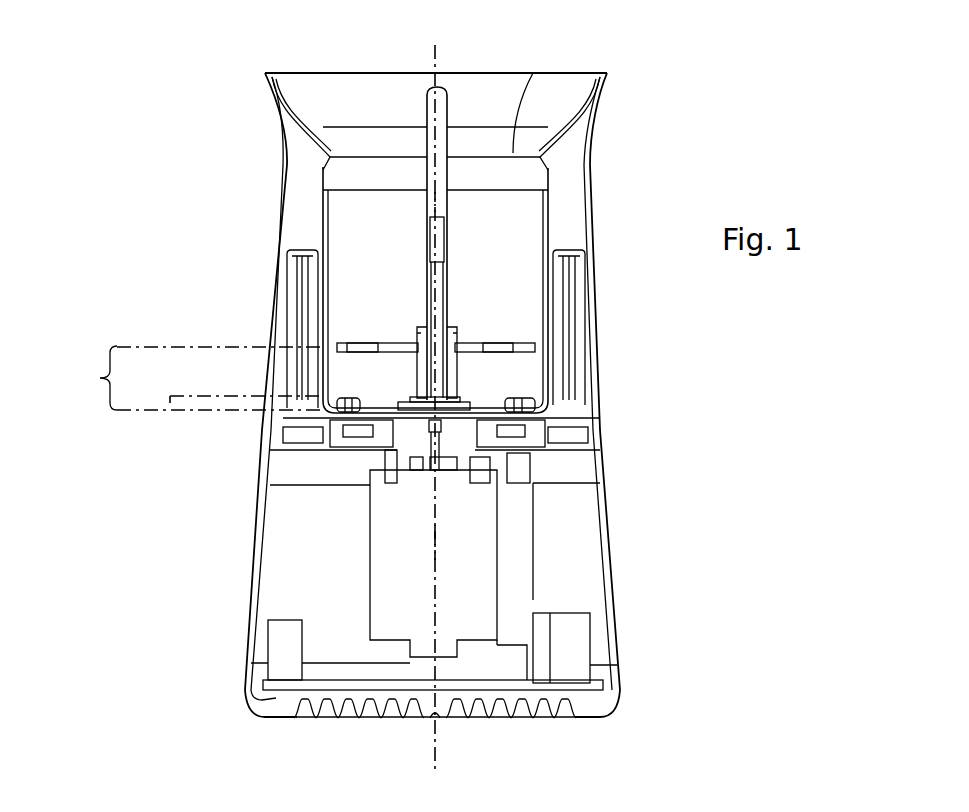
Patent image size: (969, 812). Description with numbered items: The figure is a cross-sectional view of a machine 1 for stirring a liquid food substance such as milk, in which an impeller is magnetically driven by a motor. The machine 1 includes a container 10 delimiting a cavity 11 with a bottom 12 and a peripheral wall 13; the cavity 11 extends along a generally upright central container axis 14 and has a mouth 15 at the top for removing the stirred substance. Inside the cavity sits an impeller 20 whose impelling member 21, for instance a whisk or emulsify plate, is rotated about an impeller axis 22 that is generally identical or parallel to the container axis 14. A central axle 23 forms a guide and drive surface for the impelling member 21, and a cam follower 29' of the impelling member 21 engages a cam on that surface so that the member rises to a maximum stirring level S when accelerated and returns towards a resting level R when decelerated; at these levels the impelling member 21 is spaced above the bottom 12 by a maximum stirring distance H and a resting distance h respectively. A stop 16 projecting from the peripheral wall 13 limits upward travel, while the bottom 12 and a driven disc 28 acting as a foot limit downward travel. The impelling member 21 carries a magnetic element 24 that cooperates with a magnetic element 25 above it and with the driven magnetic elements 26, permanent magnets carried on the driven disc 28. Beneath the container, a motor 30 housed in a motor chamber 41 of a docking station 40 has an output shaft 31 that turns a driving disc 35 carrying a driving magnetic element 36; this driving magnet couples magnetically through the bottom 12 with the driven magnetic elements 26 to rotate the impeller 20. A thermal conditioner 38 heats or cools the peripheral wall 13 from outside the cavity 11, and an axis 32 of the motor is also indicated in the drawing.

The machine 1 is at (170, 52).
The container 10 is at (277, 107).
The cavity 11 is at (413, 203).
The bottom 12 is at (547, 423).
The peripheral wall 13 is at (321, 214).
The central container axis 14 is at (440, 55).
The mouth 15 is at (297, 72).
The stop 16 is at (328, 157).
The impeller 20 is at (434, 220).
The impelling member 21 is at (470, 347).
The impeller axis 22 is at (433, 293).
The central axle 23 is at (440, 199).
The magnetic element 24 is at (363, 345).
The magnetic element 25 is at (441, 222).
The driven magnetic elements 26 is at (353, 403).
The driven disc 28 is at (490, 405).
The cam follower 29' is at (440, 341).
The motor 30 is at (375, 603).
The output shaft 31 is at (433, 450).
The motor axis 32 is at (435, 548).
The driving disc 35 is at (473, 430).
The driving magnetic element 36 is at (358, 432).
The thermal conditioner 38 is at (292, 288).
The docking station 40 is at (617, 608).
The motor chamber 41 is at (268, 573).
The maximum stirring level S is at (232, 348).
The resting level R is at (247, 395).
The maximum stirring distance H is at (100, 378).
The resting distance h is at (170, 403).